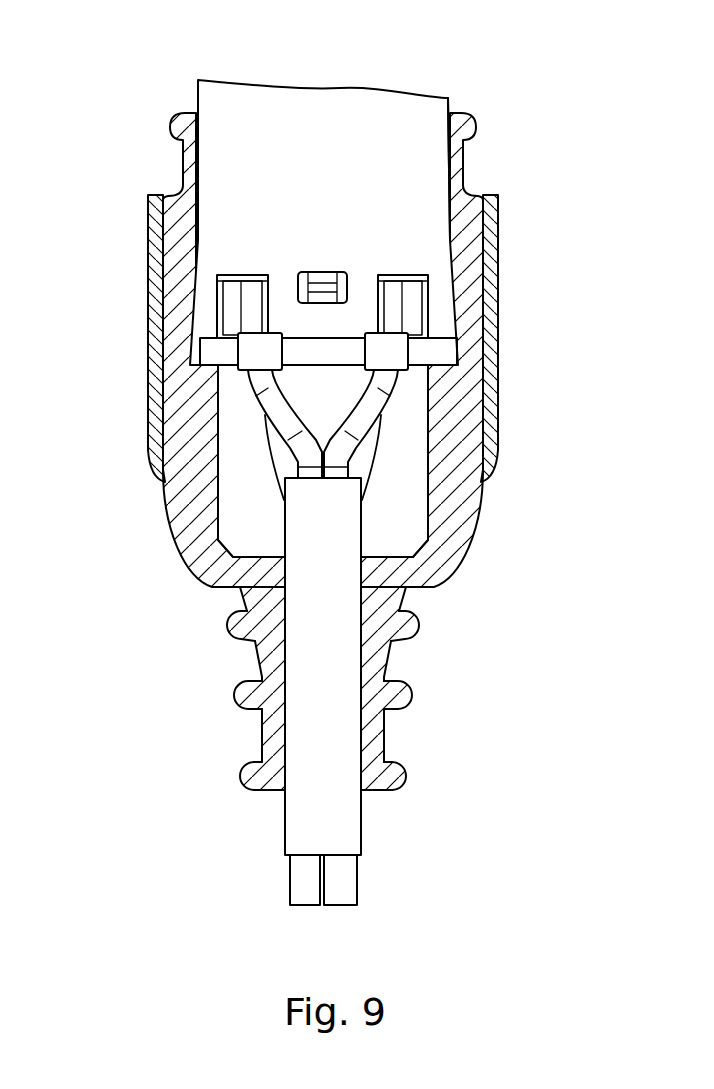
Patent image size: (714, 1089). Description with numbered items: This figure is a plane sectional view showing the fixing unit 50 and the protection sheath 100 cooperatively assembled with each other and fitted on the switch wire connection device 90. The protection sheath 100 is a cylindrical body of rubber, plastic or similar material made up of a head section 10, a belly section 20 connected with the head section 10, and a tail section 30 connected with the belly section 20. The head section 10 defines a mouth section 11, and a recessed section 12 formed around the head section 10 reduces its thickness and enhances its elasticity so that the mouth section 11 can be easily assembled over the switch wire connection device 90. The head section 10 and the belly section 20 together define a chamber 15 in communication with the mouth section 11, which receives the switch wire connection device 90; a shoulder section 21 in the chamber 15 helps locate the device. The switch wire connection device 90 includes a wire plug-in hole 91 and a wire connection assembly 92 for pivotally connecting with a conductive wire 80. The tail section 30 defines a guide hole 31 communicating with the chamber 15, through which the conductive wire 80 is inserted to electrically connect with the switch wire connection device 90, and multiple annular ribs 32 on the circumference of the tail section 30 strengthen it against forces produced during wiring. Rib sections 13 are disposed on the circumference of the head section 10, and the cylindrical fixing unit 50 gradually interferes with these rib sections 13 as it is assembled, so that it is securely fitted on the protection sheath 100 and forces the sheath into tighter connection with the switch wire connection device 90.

The protection sheath 100 is at (517, 476).
The switch wire connection device 90 is at (336, 185).
The mouth section 11 is at (431, 123).
The recessed section 12 is at (319, 350).
The rib sections 13 is at (180, 252).
The head section 10 is at (152, 204).
The belly section 20 is at (485, 385).
The fixing unit 50 is at (297, 329).
The wire plug-in hole 91 is at (269, 354).
The wire connection assembly 92 is at (405, 298).
The shoulder section 21 is at (205, 355).
The chamber 15 is at (235, 513).
The conductive wire 80 is at (252, 392).
The tail section 30 is at (309, 688).
The guide hole 31 is at (283, 657).
The annular ribs 32 is at (234, 688).